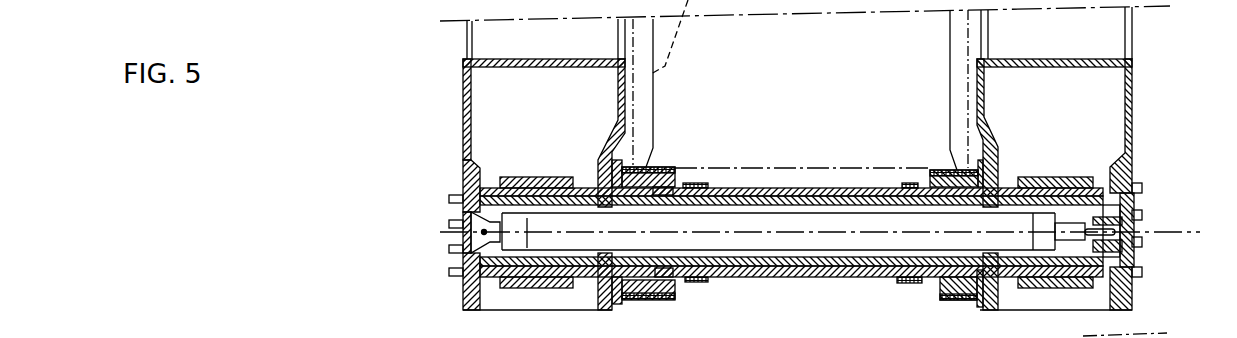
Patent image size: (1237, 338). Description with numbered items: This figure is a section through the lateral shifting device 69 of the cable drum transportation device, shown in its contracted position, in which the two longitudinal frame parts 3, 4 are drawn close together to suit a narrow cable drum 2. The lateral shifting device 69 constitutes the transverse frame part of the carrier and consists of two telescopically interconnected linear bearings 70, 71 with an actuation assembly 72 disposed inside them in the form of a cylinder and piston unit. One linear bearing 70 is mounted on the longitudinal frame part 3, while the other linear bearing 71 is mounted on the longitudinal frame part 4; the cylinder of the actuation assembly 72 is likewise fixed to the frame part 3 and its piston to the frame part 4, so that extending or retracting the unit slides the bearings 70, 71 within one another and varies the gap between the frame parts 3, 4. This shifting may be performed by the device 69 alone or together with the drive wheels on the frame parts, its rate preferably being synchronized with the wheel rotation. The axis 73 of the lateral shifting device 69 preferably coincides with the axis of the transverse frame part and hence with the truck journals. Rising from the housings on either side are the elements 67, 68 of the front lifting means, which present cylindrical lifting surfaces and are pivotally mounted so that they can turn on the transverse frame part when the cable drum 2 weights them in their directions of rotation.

The cable drum 2 is at (484, 266).
The longitudinal frame part 3 is at (463, 97).
The longitudinal frame part 4 is at (1133, 82).
The element 67 is at (648, 160).
The element 68 is at (963, 168).
The lateral shifting device 69 is at (779, 172).
The linear bearing 70 is at (725, 260).
The linear bearing 71 is at (865, 272).
The actuation assembly 72 is at (822, 235).
The axis 73 is at (1187, 232).